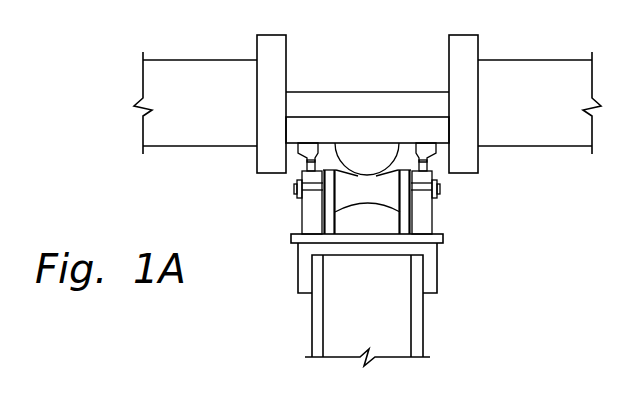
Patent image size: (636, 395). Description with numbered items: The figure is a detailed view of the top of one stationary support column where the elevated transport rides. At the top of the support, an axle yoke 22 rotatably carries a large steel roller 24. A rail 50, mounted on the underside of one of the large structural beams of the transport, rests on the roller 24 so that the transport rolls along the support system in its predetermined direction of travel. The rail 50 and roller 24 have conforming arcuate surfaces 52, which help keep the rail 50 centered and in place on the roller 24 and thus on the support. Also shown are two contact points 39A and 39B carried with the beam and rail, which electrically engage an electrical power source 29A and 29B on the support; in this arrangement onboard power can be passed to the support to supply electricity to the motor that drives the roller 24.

The axle yoke 22 is at (297, 190).
The roller 24 is at (392, 199).
The electrical power source 29A is at (306, 165).
The electrical power source 29B is at (428, 165).
The contact point 39A is at (312, 148).
The contact point 39B is at (421, 148).
The rail 50 is at (368, 152).
The conforming arcuate surface 52 is at (368, 178).